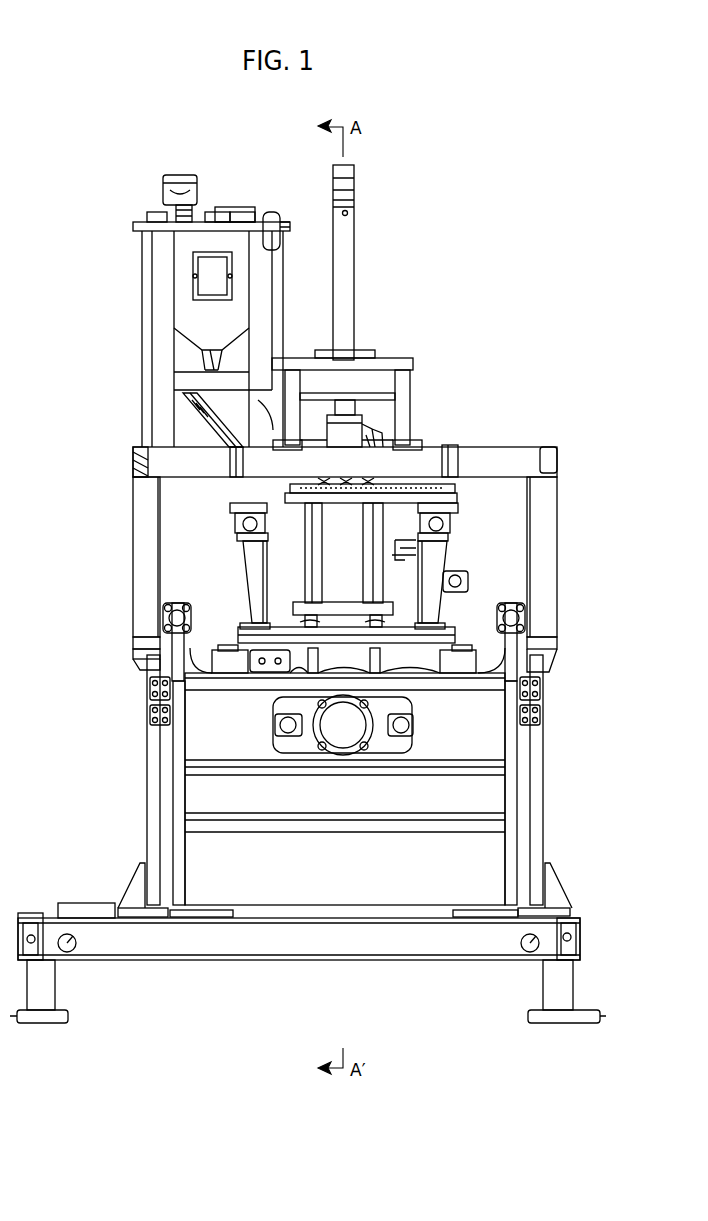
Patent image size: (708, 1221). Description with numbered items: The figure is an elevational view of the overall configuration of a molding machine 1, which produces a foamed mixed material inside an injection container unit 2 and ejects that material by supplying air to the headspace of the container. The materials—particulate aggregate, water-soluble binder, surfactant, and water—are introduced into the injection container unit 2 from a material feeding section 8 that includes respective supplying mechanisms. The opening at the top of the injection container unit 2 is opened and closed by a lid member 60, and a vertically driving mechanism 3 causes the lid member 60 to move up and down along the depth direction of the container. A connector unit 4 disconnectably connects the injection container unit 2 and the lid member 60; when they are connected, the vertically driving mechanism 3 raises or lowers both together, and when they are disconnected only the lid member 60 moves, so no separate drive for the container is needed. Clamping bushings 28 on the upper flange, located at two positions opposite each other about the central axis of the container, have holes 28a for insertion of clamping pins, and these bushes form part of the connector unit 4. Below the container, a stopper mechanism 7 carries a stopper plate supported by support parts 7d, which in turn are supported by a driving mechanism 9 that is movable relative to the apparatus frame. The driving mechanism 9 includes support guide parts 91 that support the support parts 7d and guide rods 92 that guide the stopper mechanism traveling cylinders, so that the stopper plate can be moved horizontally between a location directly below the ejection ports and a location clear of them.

The molding machine 1 is at (572, 186).
The injection container unit 2 is at (300, 574).
The vertically driving mechanism 3 is at (404, 177).
The connector unit 4 is at (368, 487).
The stopper mechanism 7 is at (241, 637).
The support parts 7d is at (253, 605).
The material feeding section 8 is at (182, 250).
The driving mechanism 9 is at (145, 503).
The clamping bushings 28 is at (293, 497).
The holes 28a is at (327, 485).
The lid member 60 is at (365, 497).
The support guide parts 91 is at (240, 531).
The guide rods 92 is at (240, 522).